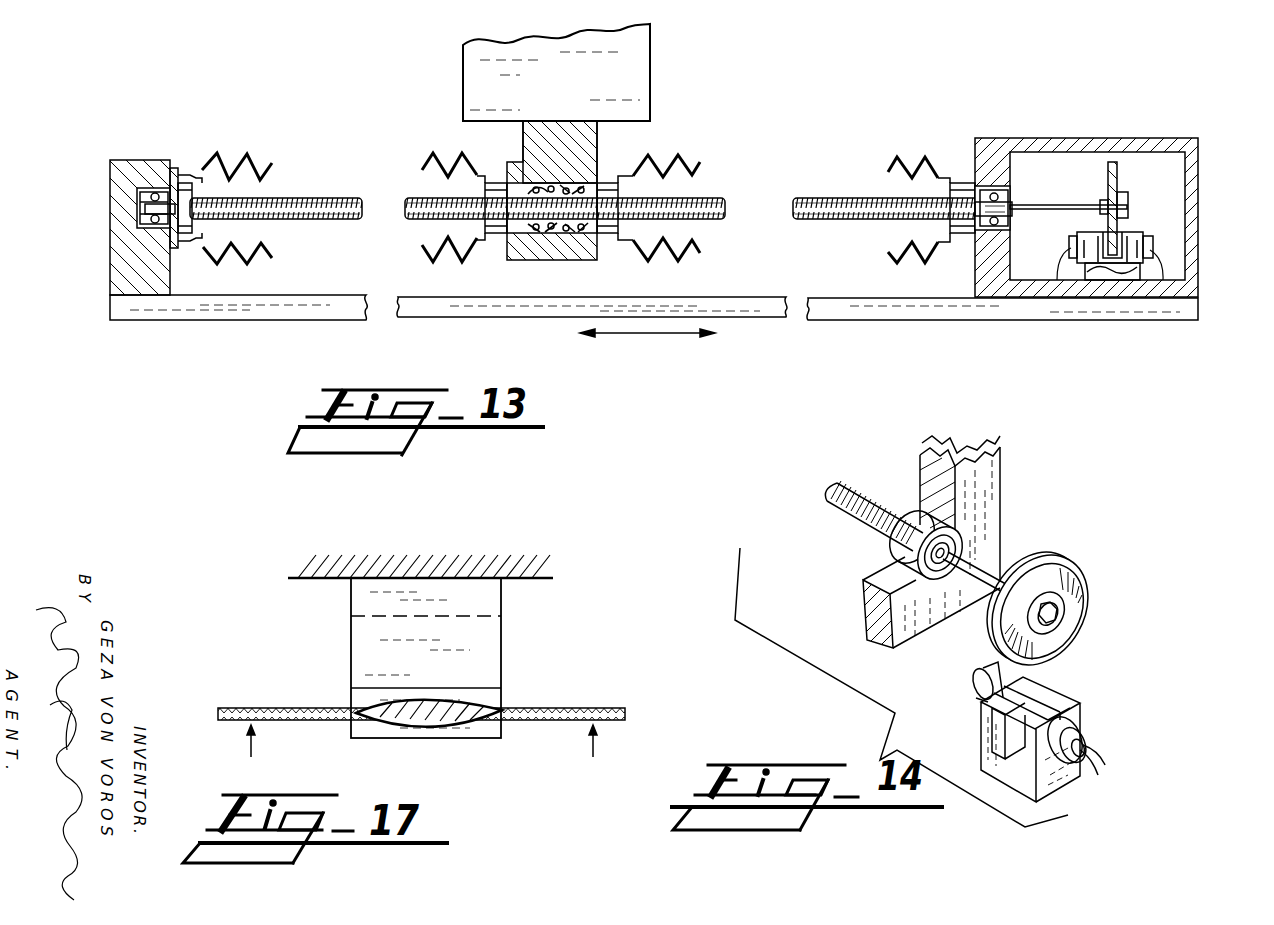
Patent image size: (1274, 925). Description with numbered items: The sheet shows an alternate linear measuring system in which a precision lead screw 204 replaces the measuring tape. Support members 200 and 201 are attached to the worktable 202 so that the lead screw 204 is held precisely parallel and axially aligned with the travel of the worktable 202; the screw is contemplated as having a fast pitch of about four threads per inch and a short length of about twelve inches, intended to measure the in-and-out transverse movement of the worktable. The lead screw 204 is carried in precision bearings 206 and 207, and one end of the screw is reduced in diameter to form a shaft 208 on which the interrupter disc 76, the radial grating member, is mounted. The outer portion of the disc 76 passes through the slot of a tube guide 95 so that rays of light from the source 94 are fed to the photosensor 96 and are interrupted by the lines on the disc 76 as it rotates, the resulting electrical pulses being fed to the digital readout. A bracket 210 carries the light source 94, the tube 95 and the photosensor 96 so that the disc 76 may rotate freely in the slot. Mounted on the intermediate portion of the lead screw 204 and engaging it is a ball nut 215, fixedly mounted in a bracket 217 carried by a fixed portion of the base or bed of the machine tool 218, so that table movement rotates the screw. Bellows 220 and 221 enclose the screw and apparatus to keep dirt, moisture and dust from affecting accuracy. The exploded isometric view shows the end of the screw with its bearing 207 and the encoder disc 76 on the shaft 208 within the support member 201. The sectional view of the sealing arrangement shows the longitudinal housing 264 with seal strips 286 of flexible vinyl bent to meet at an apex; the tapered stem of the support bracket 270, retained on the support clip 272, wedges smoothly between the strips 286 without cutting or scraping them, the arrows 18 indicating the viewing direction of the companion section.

In FIG. 13, the support member 200 is at (115, 269).
In FIG. 13, the support member 201 is at (1190, 267).
In FIG. 14, the support member 201 is at (998, 463).
In FIG. 13, the worktable 202 is at (908, 316).
In FIG. 13, the precision lead screw 204 is at (294, 202).
In FIG. 13, the precision bearing 206 is at (154, 190).
In FIG. 13, the precision bearing 207 is at (987, 190).
In FIG. 14, the precision bearing 207 is at (914, 557).
In FIG. 13, the shaft 208 is at (1040, 205).
In FIG. 13, the bracket 210 is at (1111, 282).
In FIG. 13, the ball nut 215 is at (513, 262).
In FIG. 13, the bracket 217 is at (590, 150).
In FIG. 13, the base or bed of the machine tool 218 is at (640, 82).
In FIG. 13, the bellows 220 is at (690, 160).
In FIG. 13, the bellows 221 is at (230, 165).
In FIG. 13, the interrupter disc 76 is at (1118, 179).
In FIG. 14, the interrupter disc 76 is at (1062, 563).
In FIG. 13, the light source 94 is at (1068, 244).
In FIG. 13, the tube guide 95 is at (1129, 232).
In FIG. 13, the photosensor 96 is at (1155, 241).
In FIG. 17, the longitudinal housing 264 is at (553, 575).
In FIG. 17, the support bracket 270 is at (504, 734).
In FIG. 17, the support clip 272 is at (502, 639).
In FIG. 17, the seal strips 286 is at (574, 705).
In FIG. 17, the direction arrows 18 is at (416, 757).